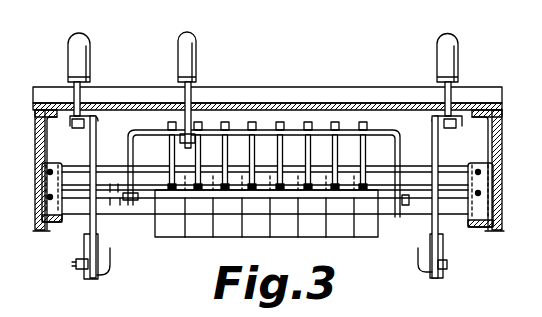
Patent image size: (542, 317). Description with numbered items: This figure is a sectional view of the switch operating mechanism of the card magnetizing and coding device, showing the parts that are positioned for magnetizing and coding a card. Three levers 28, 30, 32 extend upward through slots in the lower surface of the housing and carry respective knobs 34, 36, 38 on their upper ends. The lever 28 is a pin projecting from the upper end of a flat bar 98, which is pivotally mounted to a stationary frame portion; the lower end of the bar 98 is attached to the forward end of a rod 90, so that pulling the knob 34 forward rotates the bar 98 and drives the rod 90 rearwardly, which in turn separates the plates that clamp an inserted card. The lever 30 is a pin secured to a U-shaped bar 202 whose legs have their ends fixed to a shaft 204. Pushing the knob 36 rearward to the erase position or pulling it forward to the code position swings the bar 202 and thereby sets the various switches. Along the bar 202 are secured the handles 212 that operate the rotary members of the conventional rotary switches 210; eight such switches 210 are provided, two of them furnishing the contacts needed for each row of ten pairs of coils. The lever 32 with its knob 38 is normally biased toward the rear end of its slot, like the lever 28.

The lever 28 is at (87, 93).
The lever 30 is at (201, 147).
The lever 32 is at (450, 97).
The knob 34 is at (88, 38).
The knob 36 is at (196, 34).
The knob 38 is at (458, 41).
The rod 90 is at (111, 254).
The flat bar 98 is at (88, 226).
The U-shaped bar 202 is at (270, 129).
The shaft 204 is at (422, 197).
The rotary switches 210 is at (307, 228).
The handles 212 is at (224, 147).